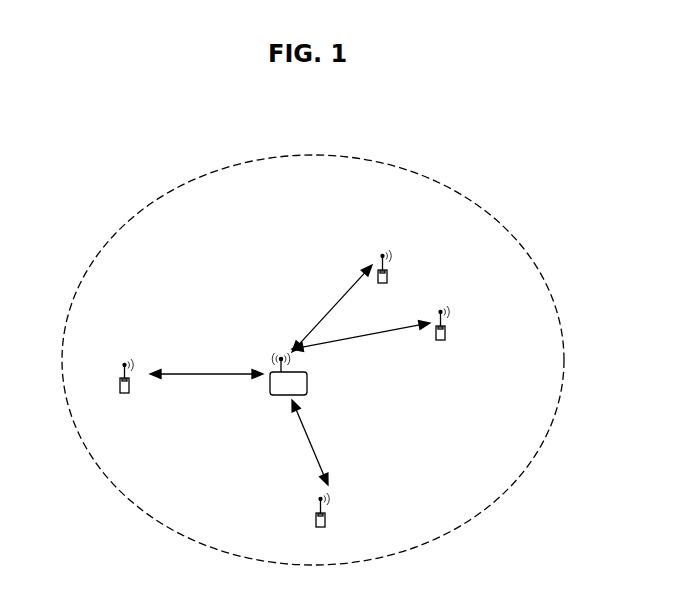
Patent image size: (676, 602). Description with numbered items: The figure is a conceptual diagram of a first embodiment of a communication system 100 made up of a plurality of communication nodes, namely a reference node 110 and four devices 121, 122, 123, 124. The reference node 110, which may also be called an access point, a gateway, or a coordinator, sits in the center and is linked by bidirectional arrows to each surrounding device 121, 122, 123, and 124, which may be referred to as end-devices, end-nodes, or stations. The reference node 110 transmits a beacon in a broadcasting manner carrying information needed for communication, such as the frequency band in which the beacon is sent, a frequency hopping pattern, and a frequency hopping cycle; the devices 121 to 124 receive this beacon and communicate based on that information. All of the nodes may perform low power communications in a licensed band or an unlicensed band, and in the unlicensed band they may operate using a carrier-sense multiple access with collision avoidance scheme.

The communication system 100 is at (326, 120).
The reference node 110 is at (307, 383).
The device 121 is at (388, 276).
The device 122 is at (446, 333).
The device 123 is at (326, 520).
The device 124 is at (130, 386).